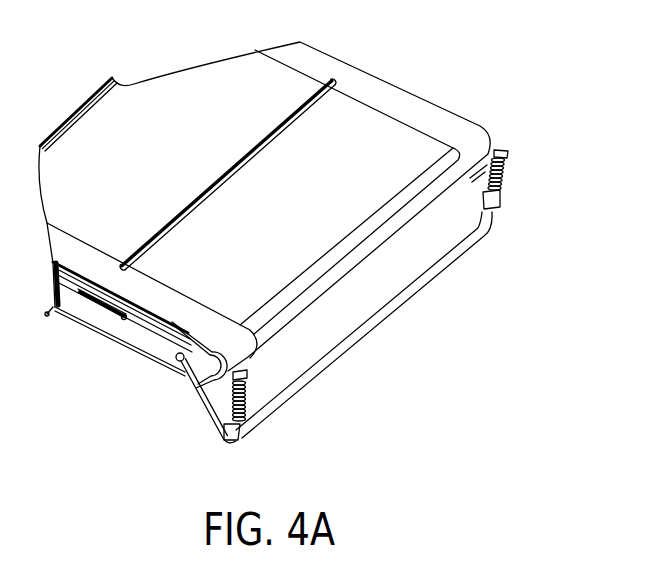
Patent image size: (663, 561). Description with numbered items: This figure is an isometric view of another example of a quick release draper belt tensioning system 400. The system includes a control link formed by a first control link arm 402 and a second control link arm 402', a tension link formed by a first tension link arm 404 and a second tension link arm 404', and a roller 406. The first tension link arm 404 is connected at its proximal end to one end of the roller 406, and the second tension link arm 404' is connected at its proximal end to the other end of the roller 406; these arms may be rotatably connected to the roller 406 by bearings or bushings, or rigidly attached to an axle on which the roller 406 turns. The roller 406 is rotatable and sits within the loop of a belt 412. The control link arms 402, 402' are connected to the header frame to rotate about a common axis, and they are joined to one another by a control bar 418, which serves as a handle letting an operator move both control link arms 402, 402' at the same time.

The quick release draper belt tensioning system 400 is at (510, 87).
The first control link arm 402 is at (257, 431).
The second control link arm 402' is at (530, 174).
The first tension link arm 404 is at (188, 401).
The second tension link arm 404' is at (444, 212).
The roller 406 is at (183, 347).
The belt 412 is at (410, 97).
The control bar 418 is at (363, 335).